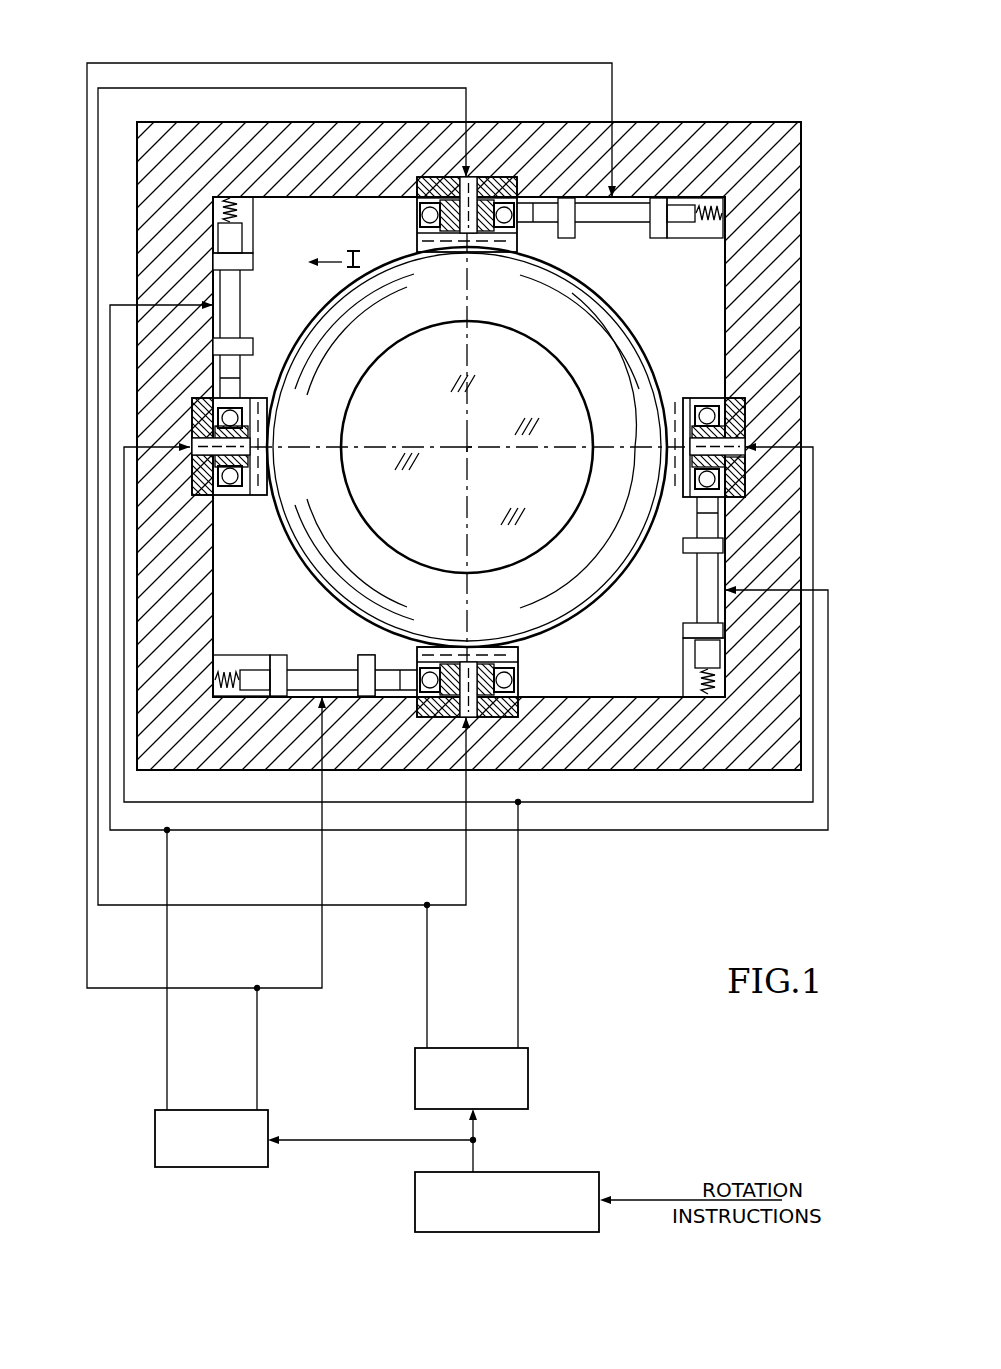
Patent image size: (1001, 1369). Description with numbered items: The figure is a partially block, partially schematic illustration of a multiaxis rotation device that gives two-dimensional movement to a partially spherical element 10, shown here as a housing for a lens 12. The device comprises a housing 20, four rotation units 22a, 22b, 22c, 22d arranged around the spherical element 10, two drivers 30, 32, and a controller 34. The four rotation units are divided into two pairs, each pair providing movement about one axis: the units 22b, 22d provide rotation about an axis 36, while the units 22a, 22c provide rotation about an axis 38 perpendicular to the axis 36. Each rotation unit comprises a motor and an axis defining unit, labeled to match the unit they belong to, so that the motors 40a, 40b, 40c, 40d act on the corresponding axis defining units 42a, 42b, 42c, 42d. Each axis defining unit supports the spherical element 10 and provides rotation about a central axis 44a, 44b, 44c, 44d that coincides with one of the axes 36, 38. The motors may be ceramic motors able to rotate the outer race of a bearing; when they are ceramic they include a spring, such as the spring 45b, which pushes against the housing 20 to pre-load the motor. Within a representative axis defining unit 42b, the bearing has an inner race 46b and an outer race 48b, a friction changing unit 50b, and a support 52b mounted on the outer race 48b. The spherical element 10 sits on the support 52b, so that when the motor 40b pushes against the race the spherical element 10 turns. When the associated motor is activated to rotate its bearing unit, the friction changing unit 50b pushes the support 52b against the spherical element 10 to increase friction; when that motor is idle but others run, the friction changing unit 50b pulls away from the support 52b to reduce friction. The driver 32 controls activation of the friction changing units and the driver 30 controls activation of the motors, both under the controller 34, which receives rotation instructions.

The partially spherical element 10 is at (627, 577).
The lens 12 is at (420, 350).
The housing 20 is at (785, 345).
The rotation unit 22a is at (734, 516).
The rotation unit 22b is at (327, 648).
The rotation unit 22c is at (292, 306).
The rotation unit 22d is at (608, 242).
The driver 30 is at (155, 1140).
The driver 32 is at (528, 1082).
The controller 34 is at (545, 1172).
The axis 36 is at (468, 296).
The axis 38 is at (373, 447).
The motor 40a is at (703, 601).
The motor 40b is at (307, 677).
The motor 40c is at (238, 281).
The motor 40d is at (633, 220).
The axis defining unit 42a is at (700, 385).
The axis defining unit 42b is at (527, 680).
The axis defining unit 42c is at (187, 412).
The axis defining unit 42d is at (492, 172).
The central axis 44a is at (747, 438).
The central axis 44b is at (530, 720).
The central axis 44c is at (192, 470).
The central axis 44d is at (440, 172).
The spring 45b is at (234, 692).
The inner race 46b is at (411, 664).
The outer race 48b is at (447, 720).
The friction changing unit 50b is at (481, 720).
The support 52b is at (523, 648).